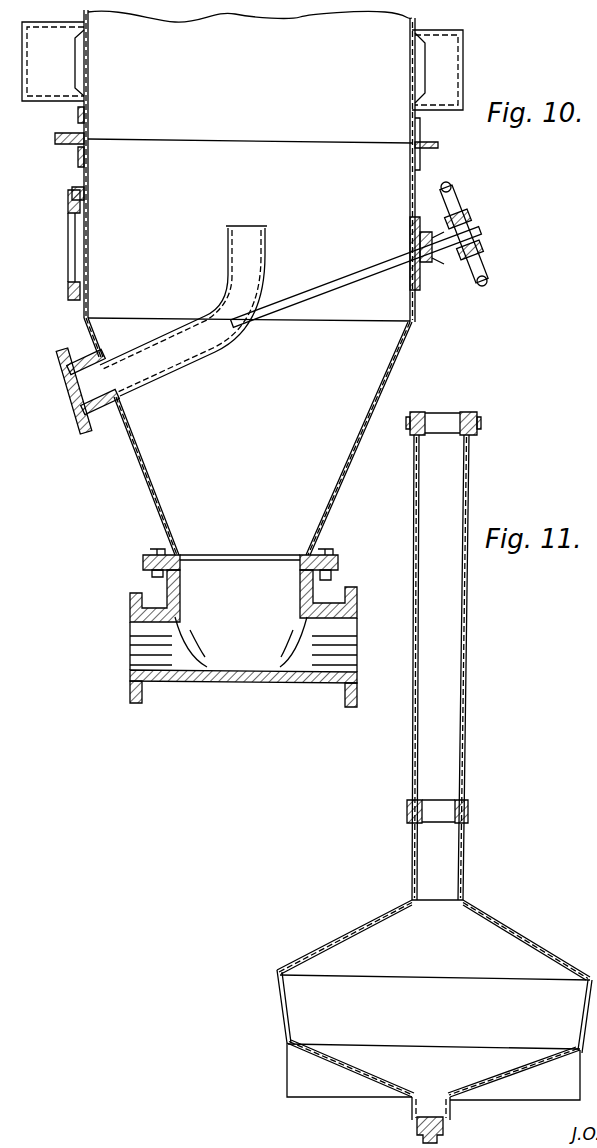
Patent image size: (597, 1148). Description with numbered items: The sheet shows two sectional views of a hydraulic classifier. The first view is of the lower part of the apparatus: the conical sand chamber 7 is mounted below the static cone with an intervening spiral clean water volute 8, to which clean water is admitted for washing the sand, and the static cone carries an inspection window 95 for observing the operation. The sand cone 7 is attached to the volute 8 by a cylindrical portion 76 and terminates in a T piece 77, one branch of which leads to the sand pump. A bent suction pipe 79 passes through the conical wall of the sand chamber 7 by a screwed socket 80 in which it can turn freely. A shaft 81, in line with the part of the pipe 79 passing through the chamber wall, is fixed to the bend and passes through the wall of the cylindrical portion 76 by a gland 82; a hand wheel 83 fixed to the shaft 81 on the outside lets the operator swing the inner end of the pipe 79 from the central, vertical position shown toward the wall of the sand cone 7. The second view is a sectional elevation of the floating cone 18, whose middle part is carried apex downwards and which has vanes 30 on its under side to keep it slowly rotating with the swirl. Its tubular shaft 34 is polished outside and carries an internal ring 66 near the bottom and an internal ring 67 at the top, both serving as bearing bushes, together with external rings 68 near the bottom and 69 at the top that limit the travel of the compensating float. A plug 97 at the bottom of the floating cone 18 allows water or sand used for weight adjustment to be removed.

In FIG. 10, the clean water volute 8 is at (463, 72).
In FIG. 10, the cylindrical portion 76 is at (417, 188).
In FIG. 10, the inspection window 95 is at (75, 252).
In FIG. 10, the conical sand chamber 7 is at (157, 508).
In FIG. 10, the bent suction pipe 79 is at (204, 358).
In FIG. 10, the screwed socket 80 is at (104, 410).
In FIG. 10, the shaft 81 is at (330, 283).
In FIG. 10, the hand wheel 83 is at (486, 262).
In FIG. 10, the gland 82 is at (420, 260).
In FIG. 10, the T piece 77 is at (240, 683).
In FIG. 11, the tubular shaft 34 is at (469, 700).
In FIG. 11, the internal ring 67 is at (430, 413).
In FIG. 11, the external ring 69 is at (477, 433).
In FIG. 11, the external ring 68 is at (468, 815).
In FIG. 11, the internal ring 66 is at (420, 824).
In FIG. 11, the floating cone 18 is at (570, 957).
In FIG. 11, the vanes 30 is at (296, 1074).
In FIG. 11, the plug 97 is at (445, 1131).